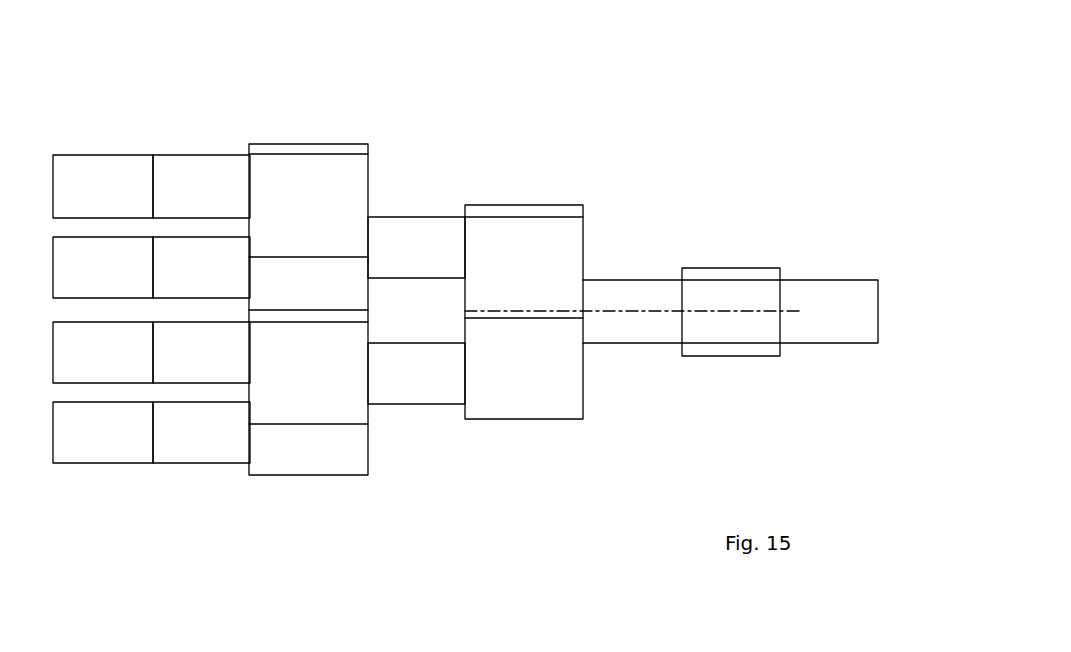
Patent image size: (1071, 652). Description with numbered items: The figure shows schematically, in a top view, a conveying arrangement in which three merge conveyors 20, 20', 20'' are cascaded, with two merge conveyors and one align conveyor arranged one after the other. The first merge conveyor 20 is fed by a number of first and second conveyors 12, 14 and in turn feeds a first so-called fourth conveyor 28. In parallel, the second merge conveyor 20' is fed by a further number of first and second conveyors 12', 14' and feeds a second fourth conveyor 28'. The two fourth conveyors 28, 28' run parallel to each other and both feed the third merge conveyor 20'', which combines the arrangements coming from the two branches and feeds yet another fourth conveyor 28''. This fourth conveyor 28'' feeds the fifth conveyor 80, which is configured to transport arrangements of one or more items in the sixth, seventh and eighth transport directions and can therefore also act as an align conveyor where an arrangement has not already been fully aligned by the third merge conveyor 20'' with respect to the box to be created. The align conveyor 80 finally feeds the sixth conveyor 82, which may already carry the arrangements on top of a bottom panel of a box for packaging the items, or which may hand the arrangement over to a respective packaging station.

The first conveyor 12 is at (151, 138).
The second conveyor 14 is at (170, 170).
The first conveyor 12' is at (151, 442).
The second conveyor 14' is at (160, 477).
The first merge conveyor 20 is at (308, 174).
The second merge conveyor 20' is at (308, 441).
The third merge conveyor 20'' is at (524, 255).
The fourth conveyor 28 is at (416, 165).
The fourth conveyor 28' is at (422, 436).
The fourth conveyor 28'' is at (643, 217).
The fifth conveyor 80 is at (708, 290).
The sixth conveyor 82 is at (810, 290).